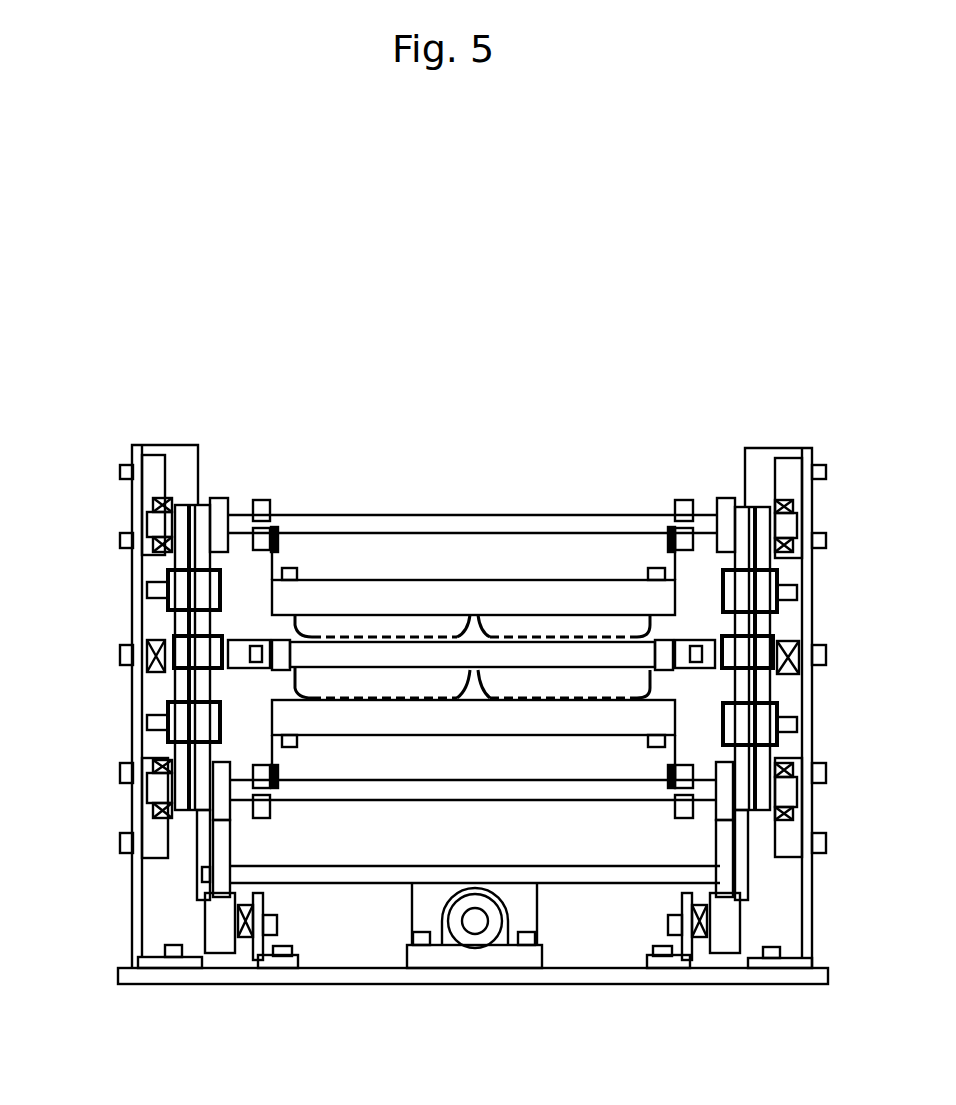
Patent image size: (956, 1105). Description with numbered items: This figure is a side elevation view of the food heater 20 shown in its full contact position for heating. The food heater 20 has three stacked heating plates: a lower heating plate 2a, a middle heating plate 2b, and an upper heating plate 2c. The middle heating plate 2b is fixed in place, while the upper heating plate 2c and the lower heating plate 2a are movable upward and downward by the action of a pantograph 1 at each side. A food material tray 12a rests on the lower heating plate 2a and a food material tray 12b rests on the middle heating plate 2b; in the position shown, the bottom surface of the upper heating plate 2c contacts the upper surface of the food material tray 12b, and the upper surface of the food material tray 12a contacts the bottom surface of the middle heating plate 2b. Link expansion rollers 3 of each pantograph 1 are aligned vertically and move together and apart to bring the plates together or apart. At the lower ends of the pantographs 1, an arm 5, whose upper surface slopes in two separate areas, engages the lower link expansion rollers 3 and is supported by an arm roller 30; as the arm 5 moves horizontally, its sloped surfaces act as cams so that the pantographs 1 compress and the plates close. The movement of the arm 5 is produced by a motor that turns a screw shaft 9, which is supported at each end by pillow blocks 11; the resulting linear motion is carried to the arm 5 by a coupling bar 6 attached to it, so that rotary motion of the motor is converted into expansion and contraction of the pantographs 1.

The pantograph 1 is at (199, 506).
The lower heating plate 2a is at (177, 722).
The middle heating plate 2b is at (176, 641).
The upper heating plate 2c is at (270, 593).
The link expansion roller 3 is at (728, 507).
The arm 5 is at (222, 847).
The coupling bar 6 is at (588, 878).
The screw shaft 9 is at (477, 930).
The pillow block 11 is at (427, 952).
The food material tray 12a is at (270, 683).
The food material tray 12b is at (290, 624).
The food heater 20 is at (773, 437).
The arm roller 30 is at (224, 940).